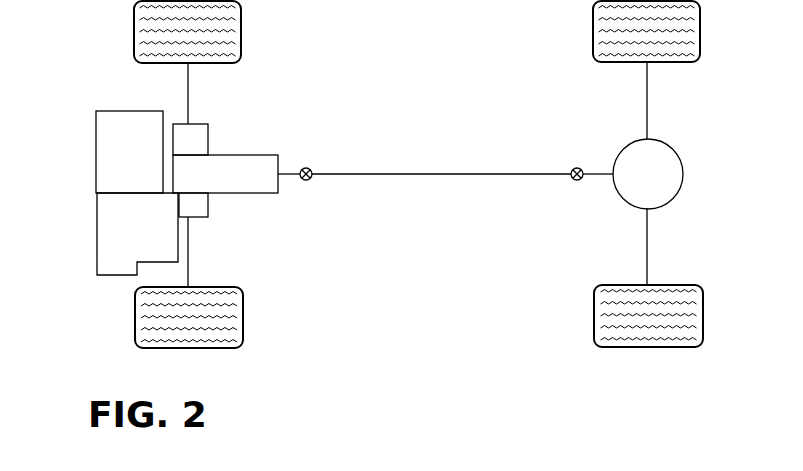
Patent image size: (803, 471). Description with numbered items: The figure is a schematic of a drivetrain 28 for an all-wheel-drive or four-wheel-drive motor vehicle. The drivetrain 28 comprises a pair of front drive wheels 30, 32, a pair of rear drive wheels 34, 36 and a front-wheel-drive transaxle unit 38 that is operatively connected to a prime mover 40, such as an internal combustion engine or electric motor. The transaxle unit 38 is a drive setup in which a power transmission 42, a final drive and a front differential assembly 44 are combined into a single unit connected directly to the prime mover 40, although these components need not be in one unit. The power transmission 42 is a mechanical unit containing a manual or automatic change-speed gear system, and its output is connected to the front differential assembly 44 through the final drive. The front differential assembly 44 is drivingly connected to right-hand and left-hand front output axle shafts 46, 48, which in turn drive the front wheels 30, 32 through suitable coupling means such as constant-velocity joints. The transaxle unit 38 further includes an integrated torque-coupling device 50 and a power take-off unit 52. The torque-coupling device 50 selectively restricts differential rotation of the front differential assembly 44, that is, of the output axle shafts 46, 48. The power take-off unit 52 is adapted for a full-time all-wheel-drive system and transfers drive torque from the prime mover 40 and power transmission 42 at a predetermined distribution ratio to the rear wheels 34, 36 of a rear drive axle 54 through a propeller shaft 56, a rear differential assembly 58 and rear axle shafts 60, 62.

The drivetrain 28 is at (400, 276).
The front drive wheel 30 is at (243, 315).
The front drive wheel 32 is at (241, 30).
The rear drive wheel 34 is at (594, 318).
The rear drive wheel 36 is at (593, 33).
The front-wheel-drive transaxle unit 38 is at (207, 228).
The prime mover 40 is at (97, 154).
The power transmission 42 is at (97, 246).
The front differential assembly 44 is at (208, 203).
The right-hand front output axle shaft 46 is at (189, 93).
The left-hand front output axle shaft 48 is at (189, 266).
The torque-coupling device 50 is at (208, 130).
The power take-off unit 52 is at (278, 162).
The rear drive axle 54 is at (695, 178).
The propeller shaft 56 is at (427, 173).
The rear differential assembly 58 is at (622, 200).
The rear axle shaft 60 is at (646, 102).
The rear axle shaft 62 is at (646, 250).